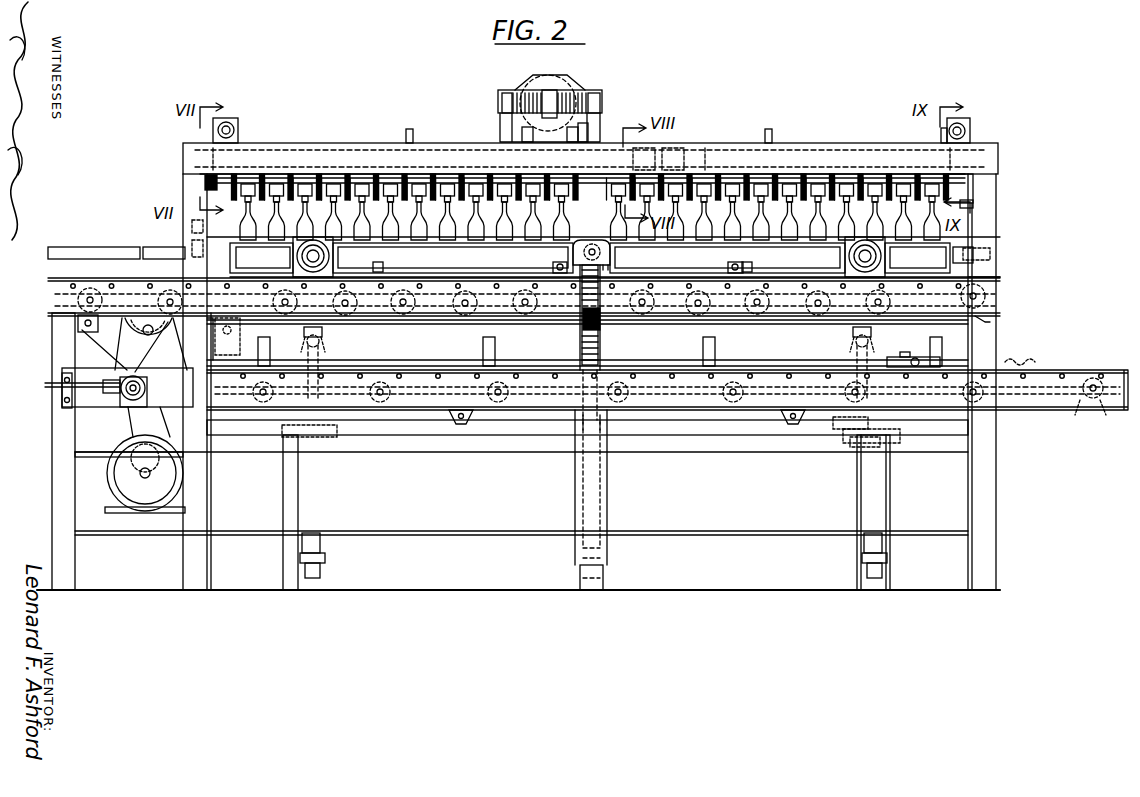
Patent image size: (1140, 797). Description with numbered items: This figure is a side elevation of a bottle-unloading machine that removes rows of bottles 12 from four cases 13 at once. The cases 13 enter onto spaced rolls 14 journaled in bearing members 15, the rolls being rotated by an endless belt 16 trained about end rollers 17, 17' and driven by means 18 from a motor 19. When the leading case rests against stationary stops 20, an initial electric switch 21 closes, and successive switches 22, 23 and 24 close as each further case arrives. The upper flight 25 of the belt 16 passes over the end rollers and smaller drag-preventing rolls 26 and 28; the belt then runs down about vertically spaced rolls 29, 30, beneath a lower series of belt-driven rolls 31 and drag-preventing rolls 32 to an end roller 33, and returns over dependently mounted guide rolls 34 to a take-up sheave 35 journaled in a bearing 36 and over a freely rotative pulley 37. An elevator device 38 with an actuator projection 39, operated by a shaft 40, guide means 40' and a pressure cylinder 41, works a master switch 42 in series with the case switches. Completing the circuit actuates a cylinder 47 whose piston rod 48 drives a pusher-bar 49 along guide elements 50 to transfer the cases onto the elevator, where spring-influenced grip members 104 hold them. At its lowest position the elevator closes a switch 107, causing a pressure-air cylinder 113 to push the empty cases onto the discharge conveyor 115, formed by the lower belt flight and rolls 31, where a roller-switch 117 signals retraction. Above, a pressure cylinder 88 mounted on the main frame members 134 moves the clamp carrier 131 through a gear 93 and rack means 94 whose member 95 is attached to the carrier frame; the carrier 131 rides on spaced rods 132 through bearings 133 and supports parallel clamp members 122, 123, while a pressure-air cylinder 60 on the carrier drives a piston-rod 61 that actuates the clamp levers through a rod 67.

The bottles 12 is at (250, 206).
The cases 13 is at (418, 238).
The spaced rolls 14 is at (112, 278).
The bearing members 15 is at (527, 306).
The endless belt 16 is at (569, 376).
The end roller 17 is at (502, 315).
The end roller 17' is at (1004, 297).
The drive means 18 is at (125, 441).
The motor 19 is at (108, 474).
The stationary stops 20 is at (992, 255).
The initial electric switch 21 is at (1000, 277).
The successive switch 22 is at (748, 250).
The successive switch 23 is at (553, 265).
The successive switch 24 is at (420, 250).
The upper flight 25 is at (148, 278).
The drag-preventing rolls 26 is at (273, 302).
The drag-preventing roll 28 is at (330, 337).
The roll 29 is at (208, 333).
The roll 30 is at (210, 350).
The belt driven rolls 31 is at (242, 400).
The drag-preventing rolls 32 is at (264, 403).
The end roller 33 is at (1085, 412).
The guide rolls 34 is at (463, 426).
The take-up sheave 35 is at (120, 407).
The bearing 36 is at (62, 402).
The freely rotative pulley 37 is at (128, 346).
The elevator device 38 is at (270, 348).
The actuator projection 39 is at (982, 320).
The shaft 40 is at (570, 435).
The guide means 40' is at (597, 433).
The pressure cylinder 41 is at (616, 491).
The master switch 42 is at (975, 250).
The cylinder 47 is at (612, 258).
The piston rod 48 is at (580, 254).
The pusher-bar 49 is at (604, 249).
The guide elements 50 is at (298, 256).
The pressure-air cylinder 60 is at (686, 152).
The piston-rod 61 is at (205, 162).
The rod 67 is at (205, 181).
The pressure cylinder 88 is at (550, 84).
The gear 93 is at (562, 97).
The rack means 94 is at (505, 102).
The member 95 is at (600, 100).
The grip members 104 is at (213, 250).
The switch 107 is at (845, 448).
The pressure-air cylinder 113 is at (603, 345).
The discharge conveyor 115 is at (1023, 352).
The roller-switch 117 is at (912, 378).
The clamp members 122 is at (288, 183).
The clamp members 123 is at (340, 183).
The clamp carrier 131 is at (370, 140).
The spaced rods 132 is at (227, 128).
The bearings 133 is at (239, 126).
The main frame members 134 is at (459, 146).